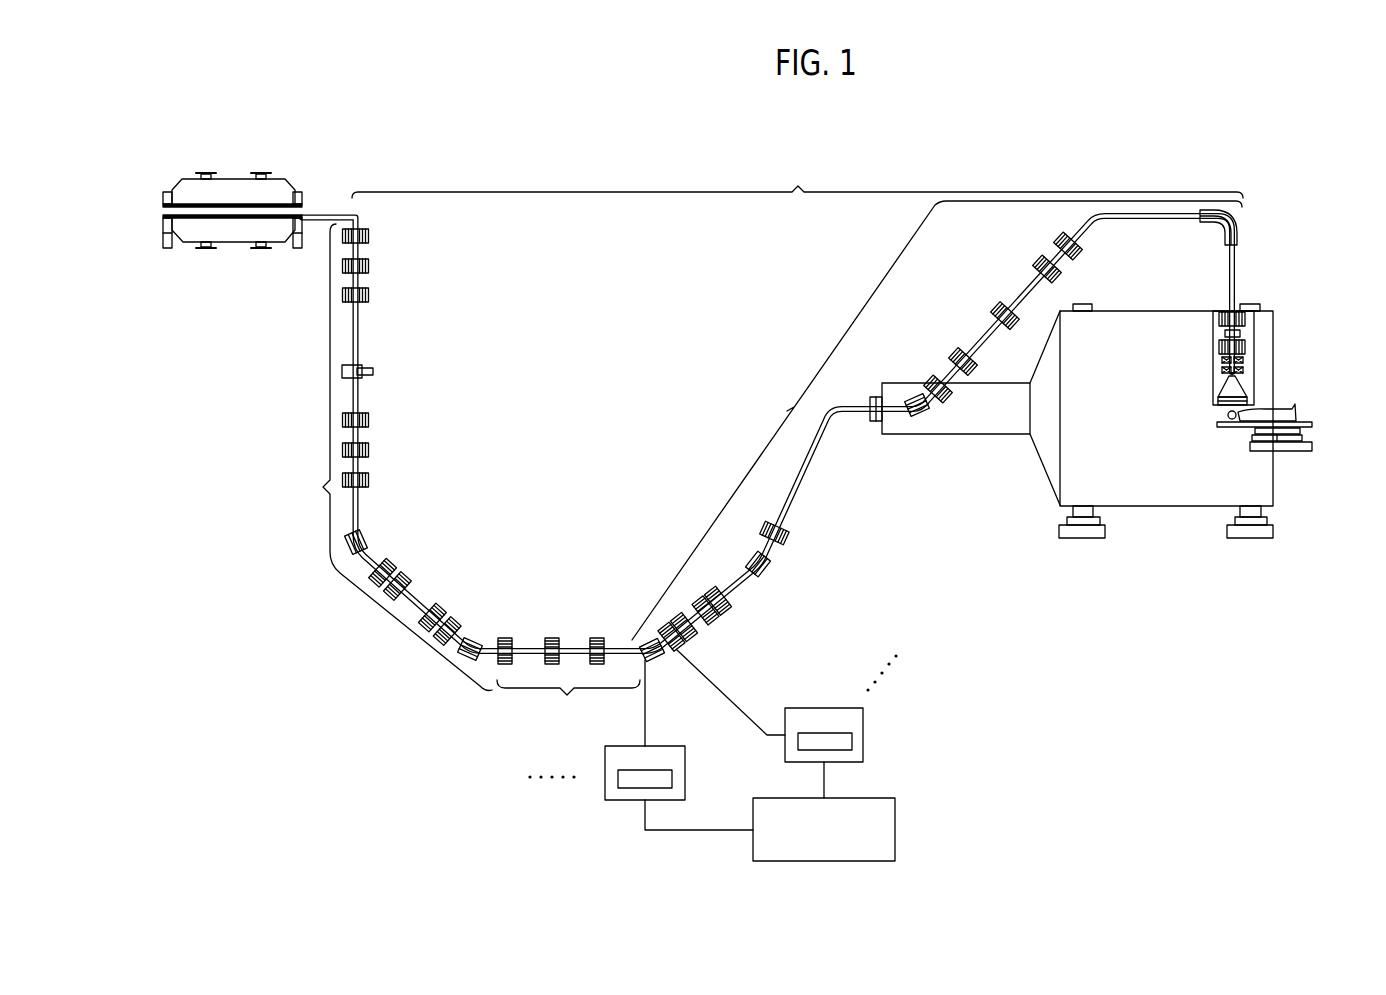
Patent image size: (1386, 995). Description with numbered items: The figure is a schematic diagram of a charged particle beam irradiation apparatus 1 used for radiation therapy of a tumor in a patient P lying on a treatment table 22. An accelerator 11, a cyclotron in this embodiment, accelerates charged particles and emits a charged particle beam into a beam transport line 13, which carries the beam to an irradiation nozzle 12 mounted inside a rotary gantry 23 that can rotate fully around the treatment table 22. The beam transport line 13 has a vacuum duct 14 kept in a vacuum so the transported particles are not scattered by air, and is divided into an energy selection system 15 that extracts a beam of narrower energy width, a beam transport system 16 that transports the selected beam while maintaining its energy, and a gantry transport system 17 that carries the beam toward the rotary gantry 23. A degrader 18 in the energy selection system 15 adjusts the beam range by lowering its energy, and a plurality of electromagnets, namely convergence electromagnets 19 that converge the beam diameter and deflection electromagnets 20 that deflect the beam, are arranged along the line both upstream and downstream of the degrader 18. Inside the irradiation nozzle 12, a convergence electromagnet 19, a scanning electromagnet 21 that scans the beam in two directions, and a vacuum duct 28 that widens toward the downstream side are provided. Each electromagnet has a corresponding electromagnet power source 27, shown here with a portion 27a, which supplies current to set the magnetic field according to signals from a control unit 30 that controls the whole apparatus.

The charged particle beam irradiation apparatus 1 is at (374, 145).
The accelerator 11 is at (186, 178).
The irradiation nozzle 12 is at (1255, 370).
The beam transport line 13 is at (797, 176).
The vacuum duct 14 is at (369, 240).
The energy selection system 15 is at (394, 457).
The beam transport system 16 is at (568, 704).
The gantry transport system 17 is at (937, 420).
The degrader 18 is at (376, 371).
The convergence electromagnet 19 is at (369, 266).
The deflection electromagnet 20 is at (362, 548).
The scanning electromagnet 21 is at (1221, 360).
The treatment table 22 is at (1312, 426).
The rotary gantry 23 is at (1274, 490).
The electromagnet power source 27 is at (686, 758).
The power supply control unit 27a is at (673, 780).
The vacuum duct 28 is at (1220, 388).
The control unit 30 is at (896, 818).
The patient P is at (1262, 409).